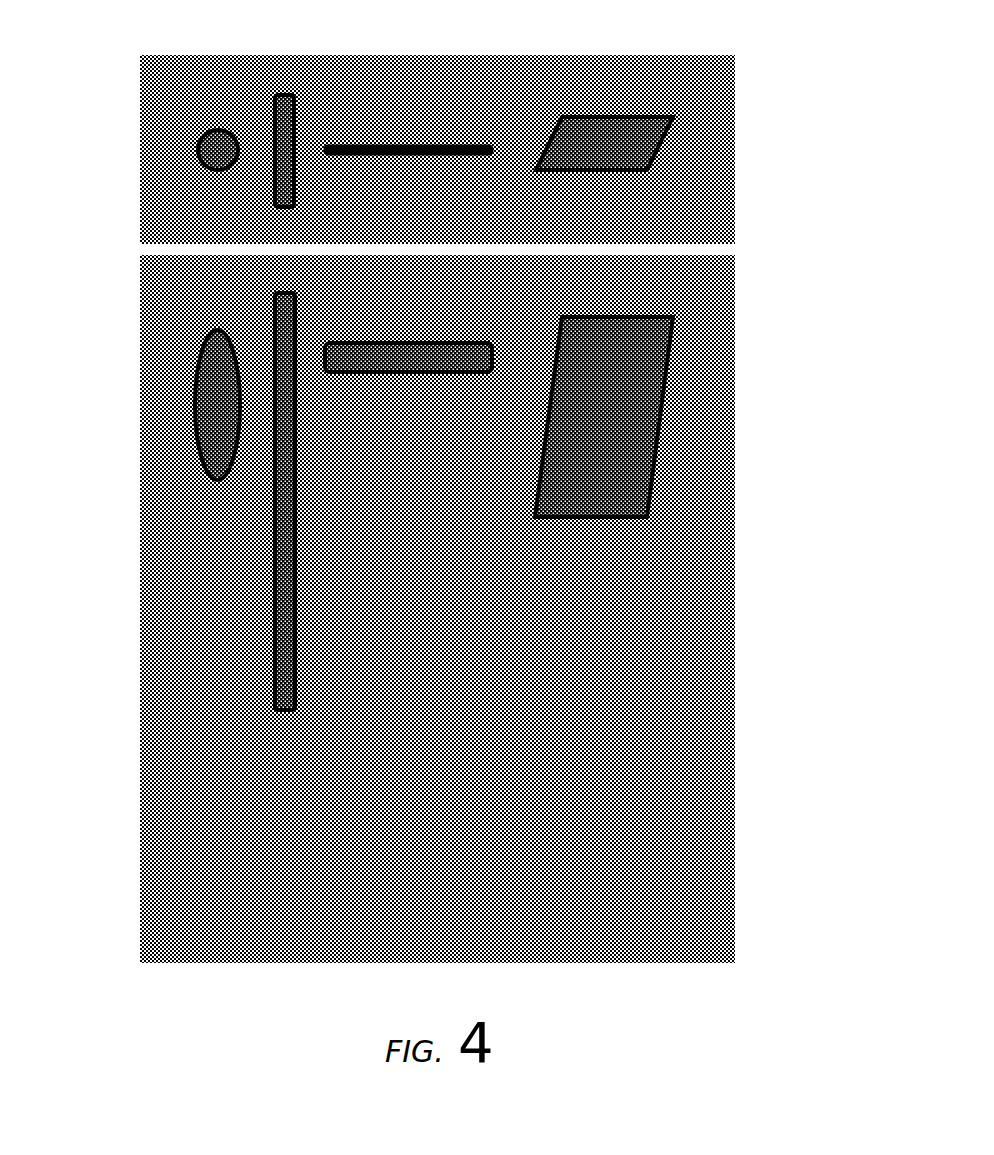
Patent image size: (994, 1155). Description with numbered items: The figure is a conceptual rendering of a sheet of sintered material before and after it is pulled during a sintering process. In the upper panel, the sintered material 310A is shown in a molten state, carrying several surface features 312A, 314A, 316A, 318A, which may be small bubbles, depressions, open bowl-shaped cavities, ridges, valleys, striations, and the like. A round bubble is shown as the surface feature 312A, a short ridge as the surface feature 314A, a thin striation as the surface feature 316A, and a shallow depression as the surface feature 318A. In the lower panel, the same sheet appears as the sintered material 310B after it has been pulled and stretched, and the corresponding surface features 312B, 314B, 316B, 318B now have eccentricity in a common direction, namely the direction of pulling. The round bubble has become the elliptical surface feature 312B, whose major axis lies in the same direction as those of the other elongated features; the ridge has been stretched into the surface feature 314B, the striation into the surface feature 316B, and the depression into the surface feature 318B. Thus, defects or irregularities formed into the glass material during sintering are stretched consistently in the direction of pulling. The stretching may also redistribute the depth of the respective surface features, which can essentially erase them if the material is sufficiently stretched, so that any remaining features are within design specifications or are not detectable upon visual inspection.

The sintered material 310A is at (100, 165).
The surface feature 312A is at (225, 135).
The surface feature 314A is at (294, 115).
The surface feature 316A is at (405, 147).
The surface feature 318A is at (610, 118).
The sintered material 310B is at (100, 385).
The surface feature 312B is at (200, 405).
The surface feature 314B is at (278, 660).
The surface feature 316B is at (370, 358).
The surface feature 318B is at (630, 380).